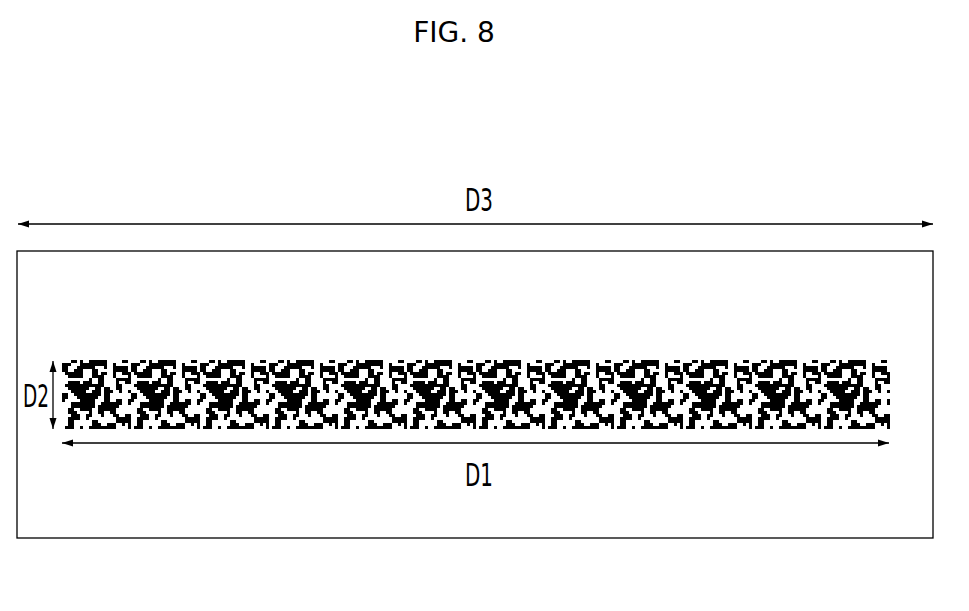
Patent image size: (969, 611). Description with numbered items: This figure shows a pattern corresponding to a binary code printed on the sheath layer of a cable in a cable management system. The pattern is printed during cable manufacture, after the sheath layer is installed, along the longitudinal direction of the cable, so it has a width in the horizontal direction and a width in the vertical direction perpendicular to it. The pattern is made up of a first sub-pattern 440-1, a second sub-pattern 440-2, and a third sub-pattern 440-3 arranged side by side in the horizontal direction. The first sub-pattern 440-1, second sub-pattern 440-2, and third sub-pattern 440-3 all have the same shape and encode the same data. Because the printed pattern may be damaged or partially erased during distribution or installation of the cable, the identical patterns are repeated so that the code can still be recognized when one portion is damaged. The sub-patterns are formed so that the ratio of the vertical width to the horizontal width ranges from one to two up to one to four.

The first sub-pattern 440-1 is at (62, 342).
The second sub-pattern 440-2 is at (337, 342).
The third sub-pattern 440-3 is at (613, 342).